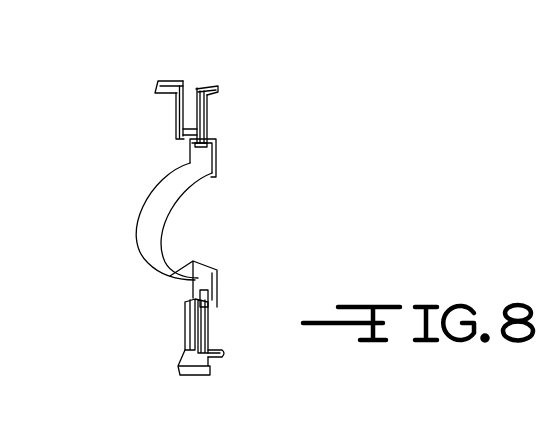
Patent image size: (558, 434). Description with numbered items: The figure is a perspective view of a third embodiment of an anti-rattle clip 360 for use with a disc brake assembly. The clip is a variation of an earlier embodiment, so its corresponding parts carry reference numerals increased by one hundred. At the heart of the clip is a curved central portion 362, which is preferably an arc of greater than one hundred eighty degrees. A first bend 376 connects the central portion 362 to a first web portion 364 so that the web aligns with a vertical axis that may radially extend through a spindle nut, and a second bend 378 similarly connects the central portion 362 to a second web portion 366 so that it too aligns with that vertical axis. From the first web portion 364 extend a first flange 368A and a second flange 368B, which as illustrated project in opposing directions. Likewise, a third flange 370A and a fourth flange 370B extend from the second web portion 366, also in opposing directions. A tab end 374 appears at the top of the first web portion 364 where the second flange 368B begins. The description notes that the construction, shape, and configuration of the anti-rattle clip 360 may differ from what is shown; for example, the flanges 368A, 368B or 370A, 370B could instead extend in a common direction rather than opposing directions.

The anti-rattle clip 360 is at (110, 228).
The curved central portion 362 is at (140, 255).
The first web portion 364 is at (208, 108).
The second web portion 366 is at (212, 322).
The first flange 368A is at (157, 87).
The second flange 368B is at (220, 90).
The third flange 370A is at (226, 353).
The fourth flange 370B is at (180, 368).
The tab end 374 is at (197, 85).
The first bend 376 is at (218, 158).
The second bend 378 is at (222, 288).